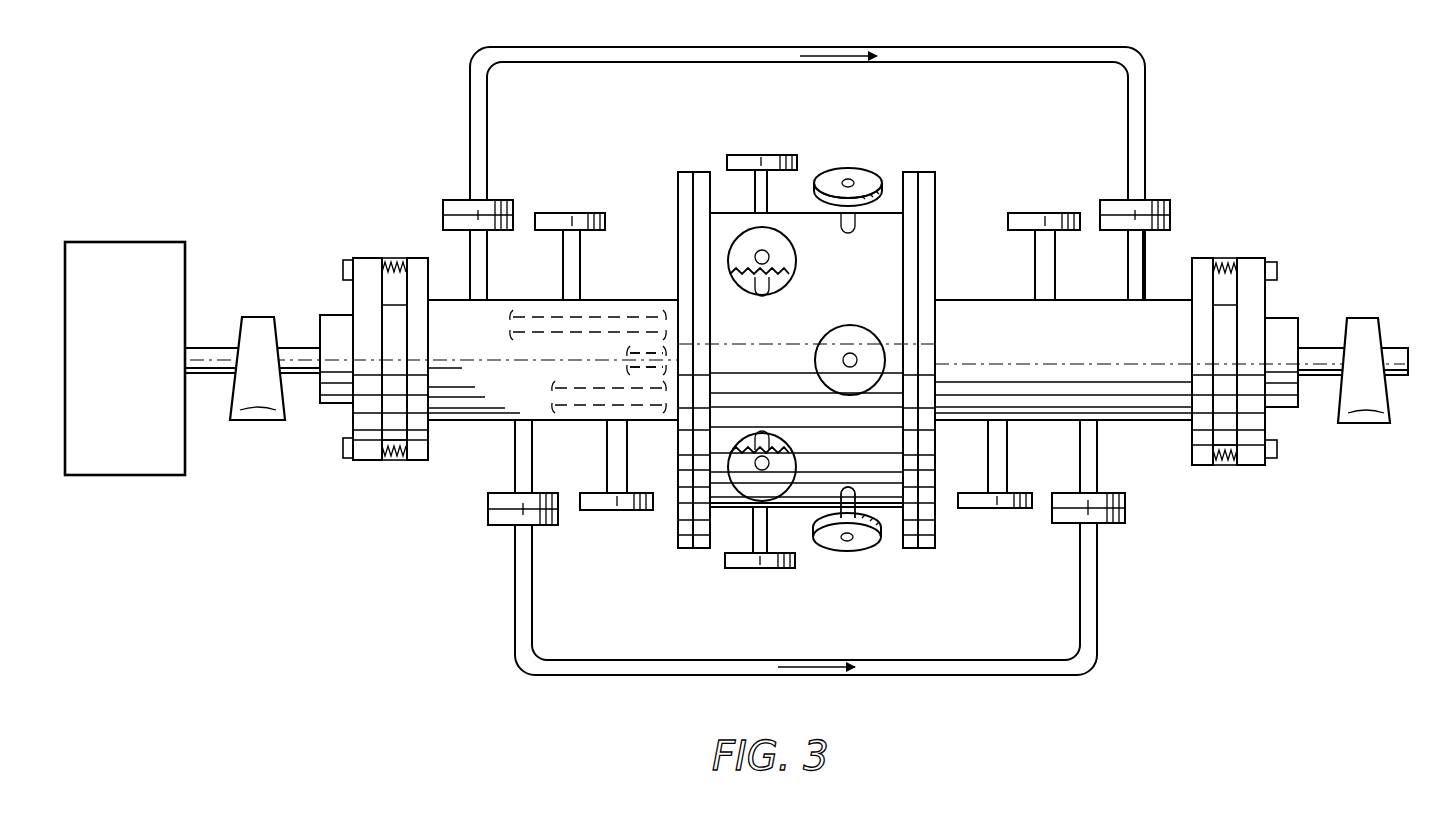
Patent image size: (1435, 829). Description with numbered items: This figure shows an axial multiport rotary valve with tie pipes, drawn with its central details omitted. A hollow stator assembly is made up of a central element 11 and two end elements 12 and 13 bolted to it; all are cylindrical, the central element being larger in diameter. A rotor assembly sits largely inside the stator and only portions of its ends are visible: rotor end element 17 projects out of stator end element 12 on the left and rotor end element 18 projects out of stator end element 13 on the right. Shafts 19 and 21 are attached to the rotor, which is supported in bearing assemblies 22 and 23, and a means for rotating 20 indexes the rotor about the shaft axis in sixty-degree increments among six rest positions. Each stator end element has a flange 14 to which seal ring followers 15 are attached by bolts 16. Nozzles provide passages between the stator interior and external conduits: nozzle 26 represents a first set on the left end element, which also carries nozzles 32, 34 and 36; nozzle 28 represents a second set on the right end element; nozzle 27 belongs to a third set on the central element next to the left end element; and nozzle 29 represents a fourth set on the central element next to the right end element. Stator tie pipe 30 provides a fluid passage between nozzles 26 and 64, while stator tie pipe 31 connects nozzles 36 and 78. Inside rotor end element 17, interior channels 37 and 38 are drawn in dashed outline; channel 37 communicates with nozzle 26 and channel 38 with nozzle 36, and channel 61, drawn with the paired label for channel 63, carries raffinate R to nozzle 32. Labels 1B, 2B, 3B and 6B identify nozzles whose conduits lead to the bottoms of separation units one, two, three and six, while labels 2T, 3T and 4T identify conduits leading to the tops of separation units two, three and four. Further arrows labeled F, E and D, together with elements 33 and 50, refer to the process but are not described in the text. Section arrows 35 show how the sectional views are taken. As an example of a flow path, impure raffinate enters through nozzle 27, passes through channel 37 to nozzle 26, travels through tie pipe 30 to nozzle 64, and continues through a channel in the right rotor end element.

The central element 11 is at (742, 212).
The stator end element 12 is at (604, 300).
The stator end element 13 is at (1066, 300).
The flange 14 is at (418, 258).
The seal ring follower 15 is at (368, 258).
The bolts 16 is at (392, 462).
The rotor end element 17 is at (336, 314).
The rotor end element 18 is at (1284, 318).
The shaft 19 is at (203, 322).
The means for rotating 20 is at (160, 242).
The shaft 21 is at (1311, 348).
The bearing assembly 22 is at (264, 424).
The bearing assembly 23 is at (1352, 426).
The nozzle 26 is at (486, 275).
The nozzle 27 is at (770, 178).
The nozzle 28 is at (1035, 265).
The nozzle 29 is at (848, 486).
The stator tie pipe 30 is at (982, 48).
The stator tie pipe 31 is at (956, 660).
The nozzle 32 is at (580, 251).
The valve 33 is at (1007, 462).
The nozzle 34 is at (628, 456).
The section arrows 35 is at (762, 70).
The nozzle 36 is at (536, 454).
The interior channel 37 is at (510, 326).
The interior channel 38 is at (553, 392).
The valve 50 is at (770, 517).
The channel 61 is at (628, 360).
The passage 63 is at (646, 360).
The nozzle 64 is at (1145, 278).
The nozzle 78 is at (1097, 459).
The bottom conduit label 1B is at (750, 280).
The bottom conduit label 2B is at (752, 426).
The top conduit label 3T is at (850, 360).
The top conduit label 2T is at (850, 170).
The top conduit label 4T is at (847, 552).
The bottom conduit label 6B is at (760, 118).
The bottom conduit label 3B is at (760, 570).
The raffinate R is at (572, 213).
The forward flow arrow F is at (1045, 213).
The exhaust flow arrow E is at (615, 510).
The drain flow arrow D is at (998, 508).